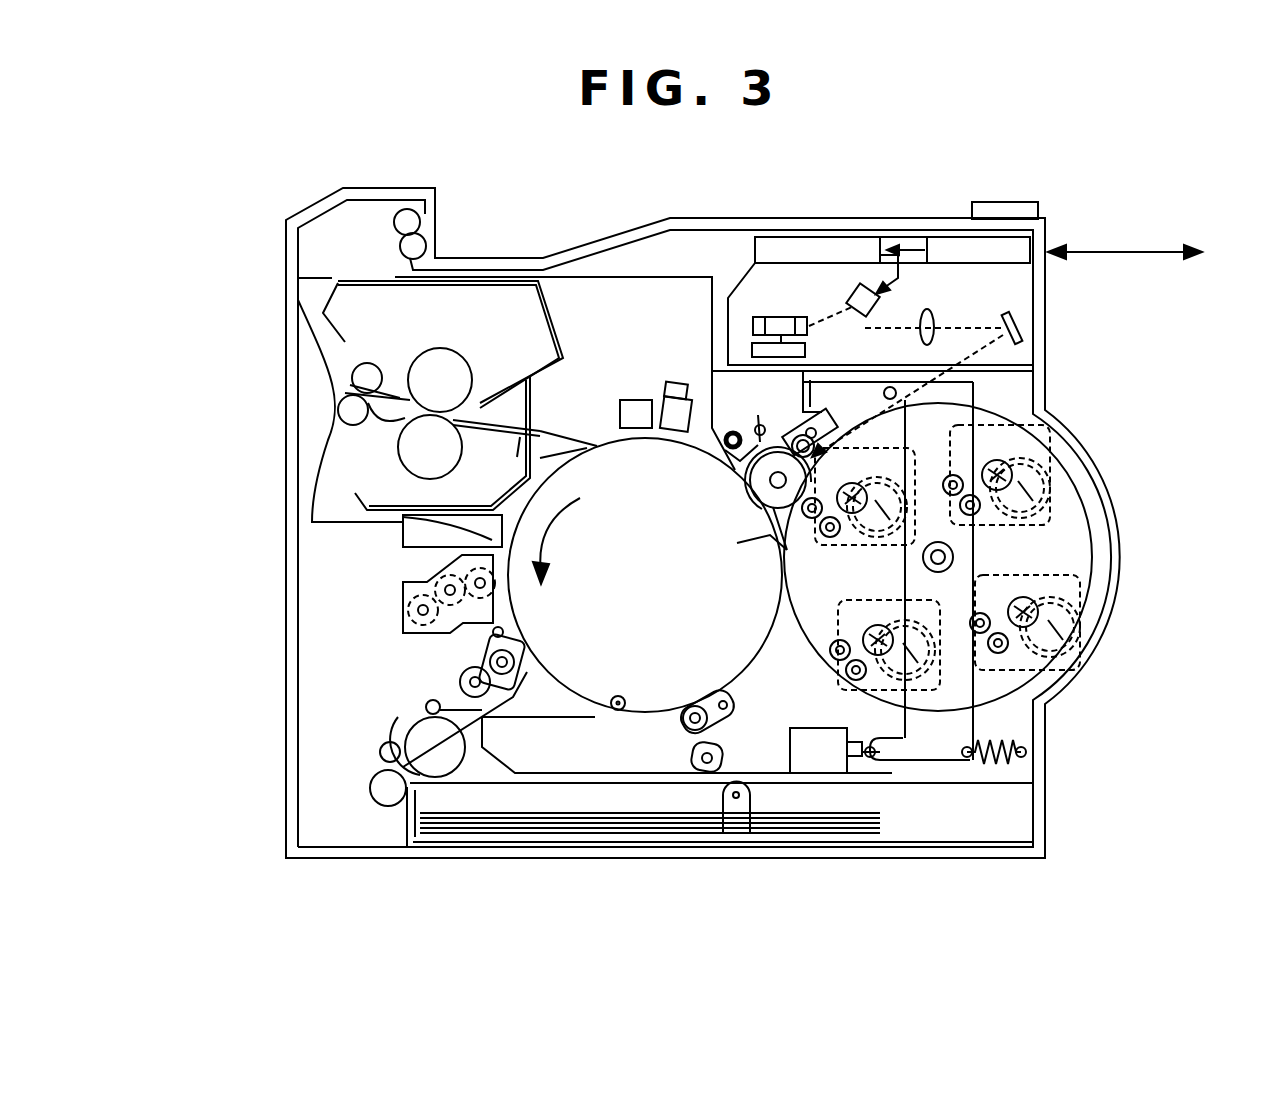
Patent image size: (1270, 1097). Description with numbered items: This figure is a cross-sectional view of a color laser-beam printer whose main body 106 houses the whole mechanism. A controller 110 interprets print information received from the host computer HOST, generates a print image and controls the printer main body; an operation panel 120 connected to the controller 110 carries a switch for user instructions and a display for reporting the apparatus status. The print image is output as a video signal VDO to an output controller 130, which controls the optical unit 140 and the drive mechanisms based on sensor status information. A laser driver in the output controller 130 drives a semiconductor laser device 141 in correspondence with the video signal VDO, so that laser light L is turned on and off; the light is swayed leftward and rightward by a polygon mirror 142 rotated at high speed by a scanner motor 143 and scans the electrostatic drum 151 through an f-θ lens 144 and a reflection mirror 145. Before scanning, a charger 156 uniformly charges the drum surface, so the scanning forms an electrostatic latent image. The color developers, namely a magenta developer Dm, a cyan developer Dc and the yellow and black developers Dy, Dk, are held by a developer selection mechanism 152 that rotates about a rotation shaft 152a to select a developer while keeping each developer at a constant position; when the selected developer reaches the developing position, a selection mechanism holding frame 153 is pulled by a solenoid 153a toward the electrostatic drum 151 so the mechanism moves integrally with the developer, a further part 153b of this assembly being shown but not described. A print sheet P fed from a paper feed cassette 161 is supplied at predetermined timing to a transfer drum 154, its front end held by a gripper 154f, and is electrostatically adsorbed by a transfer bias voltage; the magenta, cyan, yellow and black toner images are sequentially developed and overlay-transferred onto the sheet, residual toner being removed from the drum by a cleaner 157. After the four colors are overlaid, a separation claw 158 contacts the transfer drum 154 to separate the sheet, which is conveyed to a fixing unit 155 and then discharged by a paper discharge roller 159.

The housing 106 is at (572, 254).
The controller 110 is at (963, 240).
The operation panel 120 is at (1010, 202).
The output controller 130 is at (785, 240).
The optical unit 140 is at (735, 277).
The semiconductor laser device 141 is at (858, 290).
The polygon mirror 142 is at (775, 318).
The scanner motor 143 is at (752, 350).
The f-θ lens 144 is at (927, 312).
The reflection mirror 145 is at (1020, 325).
The electrostatic drum 151 is at (770, 502).
The developer selection mechanism 152 is at (1080, 532).
The rotation shaft 152a is at (953, 555).
The selection mechanism holding frame 153 is at (962, 723).
The solenoid 153a is at (795, 728).
The sensor 153b is at (888, 388).
The transfer drum 154 is at (763, 650).
The gripper 154f is at (622, 697).
The fixing unit 155 is at (330, 467).
The charger 156 is at (836, 416).
The cleaner 157 is at (755, 425).
The separation claw 158 is at (546, 434).
The paper discharge roller 159 is at (425, 230).
The paper feed cassette 161 is at (895, 845).
The yellow developer Dy is at (920, 460).
The cyan developer Dc is at (1048, 440).
The black developer Dk is at (842, 582).
The magenta developer Dm is at (1075, 590).
The laser light L is at (978, 326).
The print sheet P is at (430, 787).
The video signal VDO is at (912, 247).
The host computer HOST is at (1125, 241).